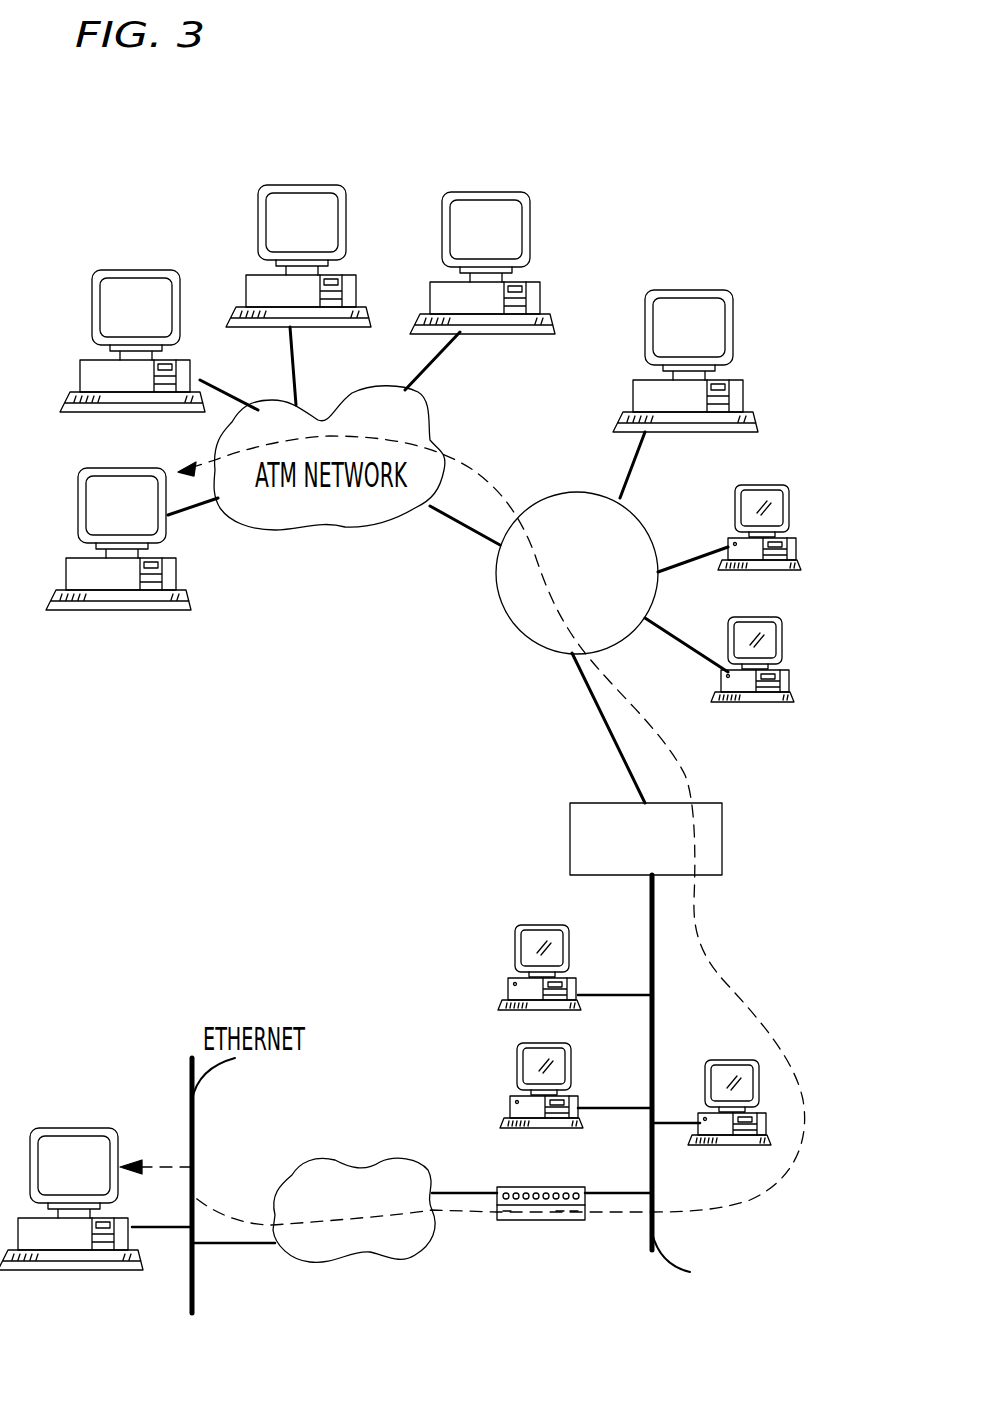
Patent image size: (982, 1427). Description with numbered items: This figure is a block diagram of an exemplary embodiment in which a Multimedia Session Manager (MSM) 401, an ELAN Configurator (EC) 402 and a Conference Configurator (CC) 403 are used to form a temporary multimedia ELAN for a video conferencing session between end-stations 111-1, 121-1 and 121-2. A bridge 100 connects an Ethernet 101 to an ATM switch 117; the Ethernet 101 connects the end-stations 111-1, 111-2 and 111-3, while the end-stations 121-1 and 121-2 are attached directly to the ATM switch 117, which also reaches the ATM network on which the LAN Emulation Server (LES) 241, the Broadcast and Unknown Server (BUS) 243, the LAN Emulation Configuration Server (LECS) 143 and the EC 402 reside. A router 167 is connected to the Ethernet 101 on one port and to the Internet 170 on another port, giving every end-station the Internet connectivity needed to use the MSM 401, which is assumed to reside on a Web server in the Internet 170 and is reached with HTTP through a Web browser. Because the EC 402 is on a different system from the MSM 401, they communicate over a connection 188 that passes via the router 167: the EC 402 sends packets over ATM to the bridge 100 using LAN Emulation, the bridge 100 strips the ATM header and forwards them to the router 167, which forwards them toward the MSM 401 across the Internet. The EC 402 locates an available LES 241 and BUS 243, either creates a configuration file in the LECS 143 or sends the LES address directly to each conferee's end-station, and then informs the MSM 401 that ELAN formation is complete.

The bridge 100 is at (605, 803).
The Ethernet 101 is at (650, 975).
The end-station 111-1 is at (512, 927).
The end-station 111-2 is at (517, 1068).
The end-station 111-3 is at (727, 1060).
The ATM switch 117 is at (500, 612).
The end-station 121-1 is at (763, 485).
The end-station 121-2 is at (780, 643).
The LAN Emulation Configuration Server (LECS) 143 is at (737, 350).
The router 167 is at (505, 1187).
The Internet 170 is at (342, 1265).
The connection 188 is at (480, 468).
The LAN Emulation Server (LES) 241 is at (265, 218).
The Broadcast and Unknown Server (BUS) 243 is at (445, 214).
The Multimedia Session Manager (MSM) 401 is at (92, 1272).
The ELAN Configurator (EC) 402 is at (130, 470).
The Conference Configurator (CC) 403 is at (140, 270).